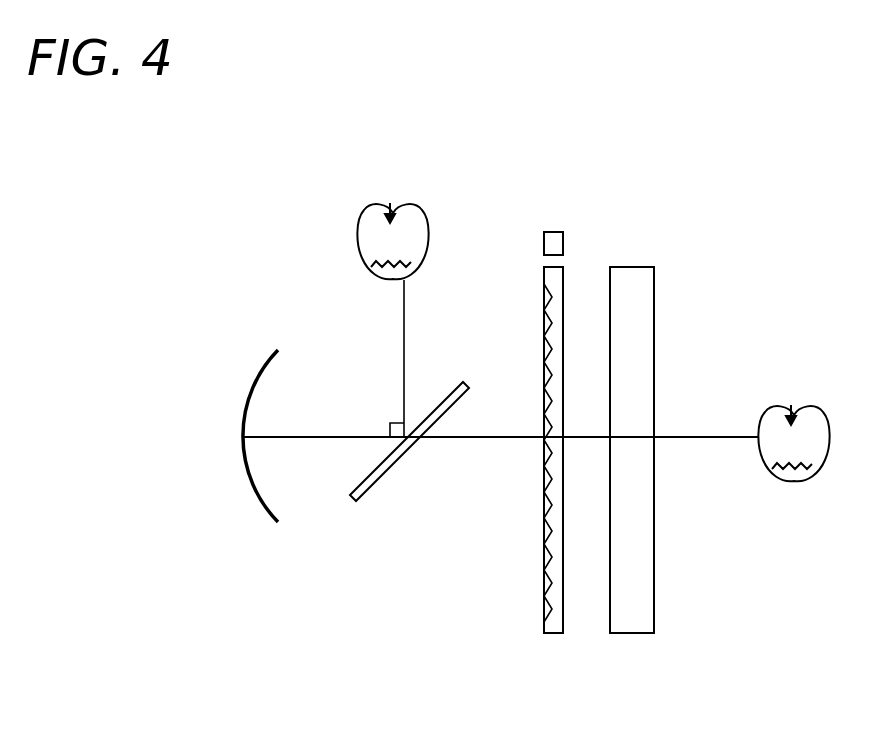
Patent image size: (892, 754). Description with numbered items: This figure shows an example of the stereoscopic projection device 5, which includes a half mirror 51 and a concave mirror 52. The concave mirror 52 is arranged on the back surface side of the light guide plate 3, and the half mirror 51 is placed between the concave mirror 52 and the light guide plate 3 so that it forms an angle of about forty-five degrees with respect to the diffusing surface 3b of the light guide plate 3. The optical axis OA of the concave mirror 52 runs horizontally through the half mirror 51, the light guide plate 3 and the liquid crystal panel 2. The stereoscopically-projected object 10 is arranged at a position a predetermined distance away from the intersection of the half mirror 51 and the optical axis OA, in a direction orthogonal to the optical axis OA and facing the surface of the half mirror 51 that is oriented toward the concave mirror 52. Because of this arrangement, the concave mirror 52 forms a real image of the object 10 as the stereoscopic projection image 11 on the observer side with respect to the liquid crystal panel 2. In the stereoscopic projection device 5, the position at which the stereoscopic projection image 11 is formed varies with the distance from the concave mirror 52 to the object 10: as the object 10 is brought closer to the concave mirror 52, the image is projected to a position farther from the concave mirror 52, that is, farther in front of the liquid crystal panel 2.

The liquid crystal panel 2 is at (630, 635).
The light guide plate 3 is at (509, 474).
The diffusing surface 3b is at (545, 607).
The stereoscopic projection device 5 is at (332, 503).
The half mirror 51 is at (395, 452).
The concave mirror 52 is at (236, 449).
The object 10 is at (412, 238).
The stereoscopic projection image 11 is at (812, 480).
The optical axis OA is at (517, 438).